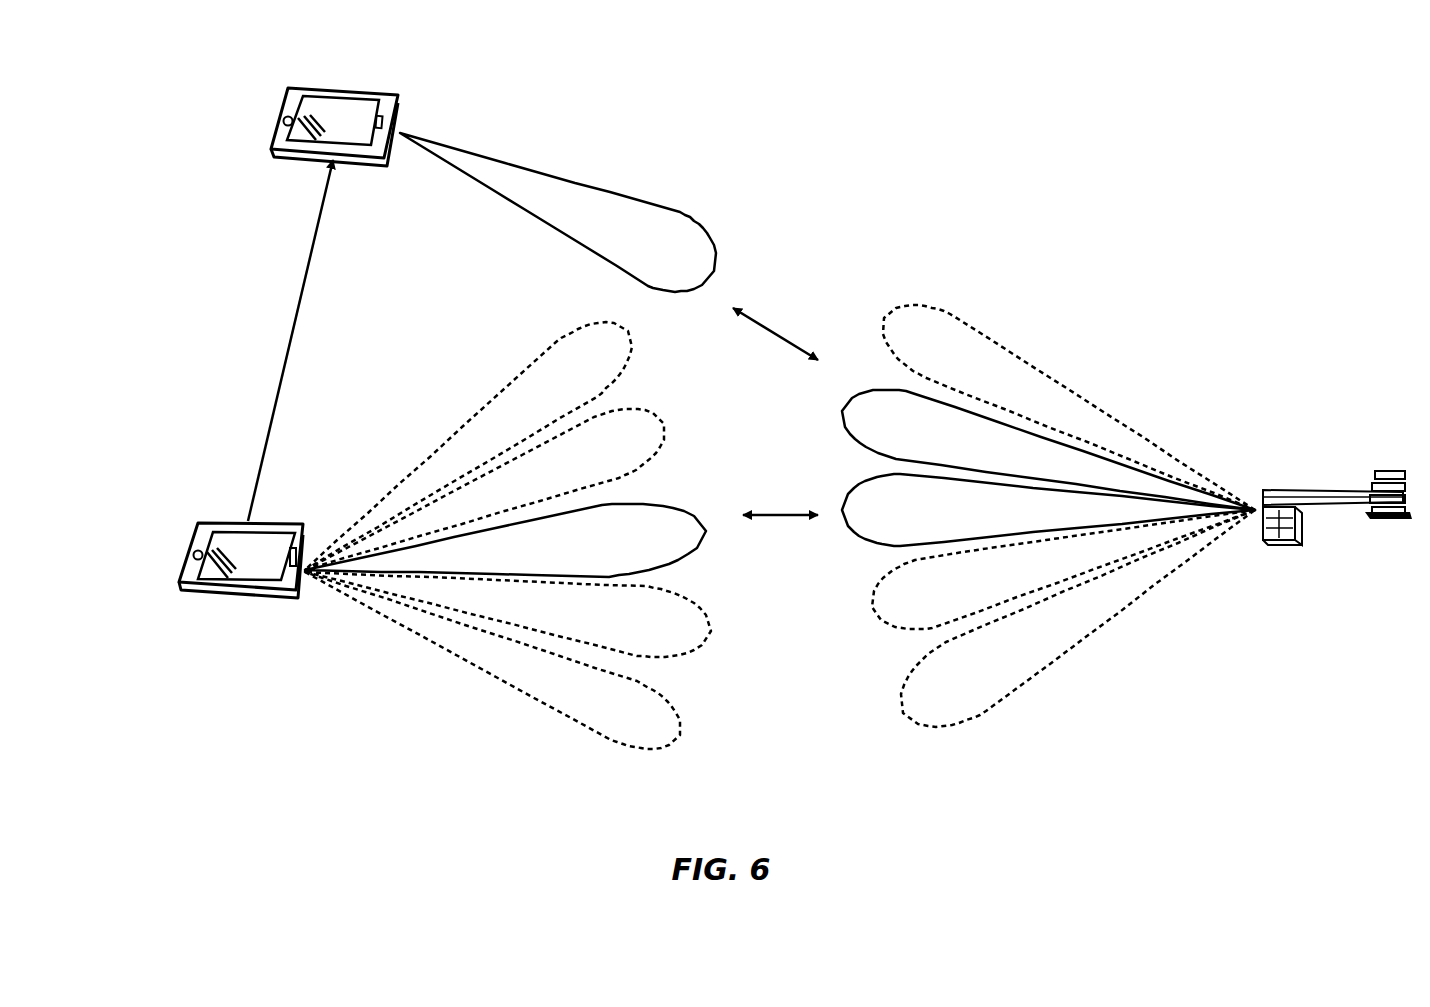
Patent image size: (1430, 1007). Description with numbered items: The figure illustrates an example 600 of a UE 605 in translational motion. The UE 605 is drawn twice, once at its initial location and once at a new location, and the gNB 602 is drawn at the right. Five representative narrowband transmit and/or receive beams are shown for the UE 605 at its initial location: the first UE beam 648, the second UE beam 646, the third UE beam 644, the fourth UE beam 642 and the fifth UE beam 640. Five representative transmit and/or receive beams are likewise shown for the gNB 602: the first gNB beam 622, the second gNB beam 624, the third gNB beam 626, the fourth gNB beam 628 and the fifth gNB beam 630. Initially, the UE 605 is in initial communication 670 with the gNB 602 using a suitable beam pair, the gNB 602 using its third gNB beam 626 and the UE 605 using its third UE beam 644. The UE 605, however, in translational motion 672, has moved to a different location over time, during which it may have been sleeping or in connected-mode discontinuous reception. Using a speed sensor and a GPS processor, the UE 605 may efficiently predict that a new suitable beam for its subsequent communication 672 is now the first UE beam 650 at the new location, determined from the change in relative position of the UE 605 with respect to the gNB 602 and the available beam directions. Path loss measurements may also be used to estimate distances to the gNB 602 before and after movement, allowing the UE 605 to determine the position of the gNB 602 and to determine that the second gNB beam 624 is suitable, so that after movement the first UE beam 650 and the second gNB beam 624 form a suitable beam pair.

The wireless communications system 600 is at (138, 51).
The gNB 602 is at (1337, 547).
The UE 605 is at (270, 152).
The gNB beam 1 622 is at (885, 305).
The gNB beam 2 624 is at (847, 400).
The gNB beam 3 626 is at (843, 503).
The gNB beam 4 628 is at (873, 613).
The gNB beam 5 630 is at (903, 713).
The UE beam 5 640 is at (625, 347).
The UE beam 4 642 is at (663, 430).
The UE beam 3 644 is at (708, 540).
The UE beam 2 646 is at (712, 638).
The UE beam 1 648 is at (677, 740).
The UE beam 1 650 is at (662, 287).
The initial communication 670 is at (783, 517).
The translational motion 672 is at (283, 378).